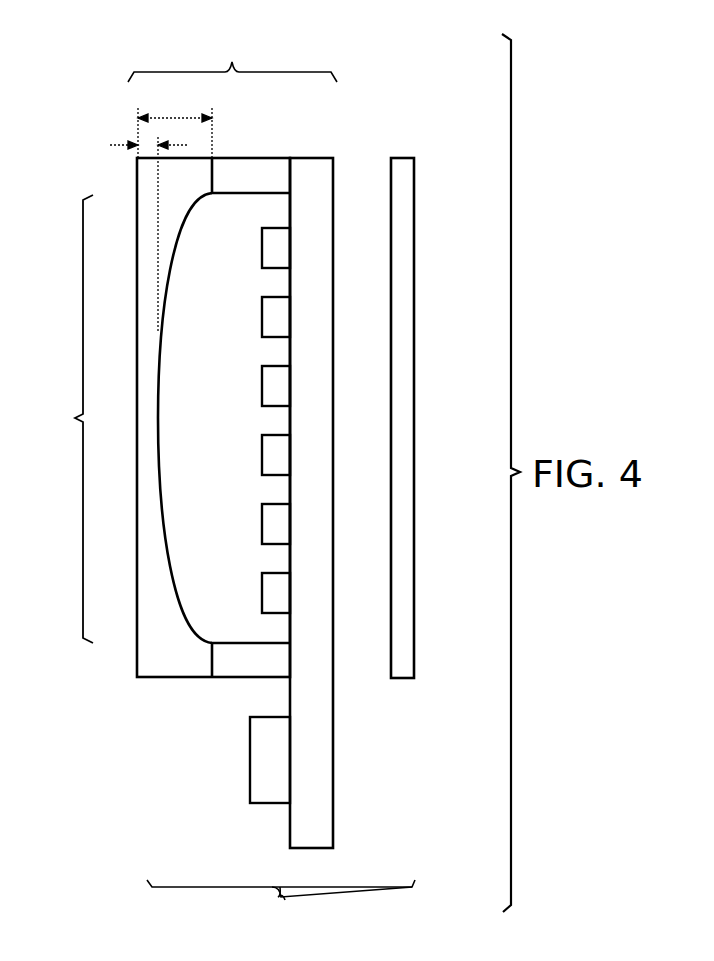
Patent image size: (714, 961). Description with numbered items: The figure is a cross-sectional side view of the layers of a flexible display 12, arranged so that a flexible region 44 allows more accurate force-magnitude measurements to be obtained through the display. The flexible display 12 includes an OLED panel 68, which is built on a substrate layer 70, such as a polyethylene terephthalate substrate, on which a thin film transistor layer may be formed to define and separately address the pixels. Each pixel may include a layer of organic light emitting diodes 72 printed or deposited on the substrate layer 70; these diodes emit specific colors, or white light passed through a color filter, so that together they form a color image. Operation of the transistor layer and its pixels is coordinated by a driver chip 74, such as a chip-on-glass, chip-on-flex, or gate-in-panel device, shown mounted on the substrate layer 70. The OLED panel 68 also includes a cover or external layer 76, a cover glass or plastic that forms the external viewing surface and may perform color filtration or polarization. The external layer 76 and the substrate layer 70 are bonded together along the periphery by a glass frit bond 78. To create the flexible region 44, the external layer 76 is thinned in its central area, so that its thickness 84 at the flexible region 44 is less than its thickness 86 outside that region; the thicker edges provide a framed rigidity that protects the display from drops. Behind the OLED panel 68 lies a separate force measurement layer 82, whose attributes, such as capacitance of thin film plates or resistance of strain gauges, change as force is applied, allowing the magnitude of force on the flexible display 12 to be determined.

The flexible display 12 is at (281, 897).
The flexible region 44 is at (75, 418).
The OLED panel 68 is at (233, 61).
The substrate layer 70 is at (313, 850).
The organic light emitting diodes 72 is at (262, 242).
The driver chip 74 is at (252, 745).
The external layer 76 is at (147, 673).
The glass frit bond 78 is at (253, 163).
The force measurement layer 82 is at (400, 158).
The thickness 84 is at (110, 145).
The thickness 86 is at (184, 116).